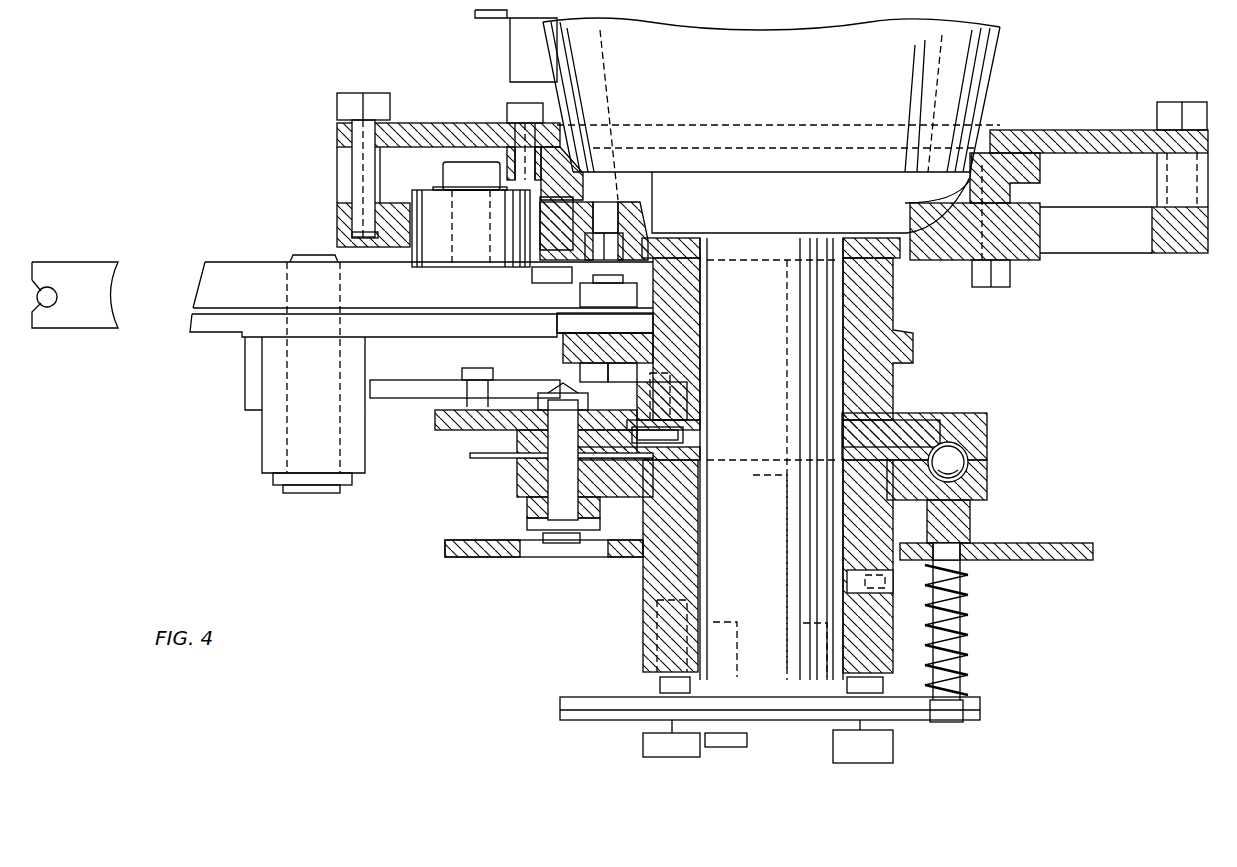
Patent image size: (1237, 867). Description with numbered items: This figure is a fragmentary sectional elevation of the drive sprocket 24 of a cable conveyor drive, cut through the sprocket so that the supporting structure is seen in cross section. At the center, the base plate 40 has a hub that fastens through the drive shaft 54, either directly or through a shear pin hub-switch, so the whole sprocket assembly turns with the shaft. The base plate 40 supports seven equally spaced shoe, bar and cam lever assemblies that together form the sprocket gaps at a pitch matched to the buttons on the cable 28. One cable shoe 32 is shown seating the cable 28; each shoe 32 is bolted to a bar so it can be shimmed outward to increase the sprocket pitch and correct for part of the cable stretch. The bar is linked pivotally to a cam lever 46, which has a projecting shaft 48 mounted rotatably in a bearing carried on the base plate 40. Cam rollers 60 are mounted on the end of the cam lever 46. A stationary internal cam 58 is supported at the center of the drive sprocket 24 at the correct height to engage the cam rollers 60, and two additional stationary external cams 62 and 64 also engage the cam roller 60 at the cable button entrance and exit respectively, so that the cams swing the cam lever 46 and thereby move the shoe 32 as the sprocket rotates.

The drive sprocket 24 is at (273, 238).
The cable 28 is at (50, 300).
The cable shoe 32 is at (97, 272).
The base plate 40 is at (400, 333).
The cam lever 46 is at (207, 287).
The projecting shaft 48 is at (300, 433).
The drive shaft 54 is at (790, 364).
The internal cam 58 is at (1037, 260).
The cam roller 60 is at (425, 200).
The external cam 62 is at (337, 215).
The external cam 64 is at (1202, 253).